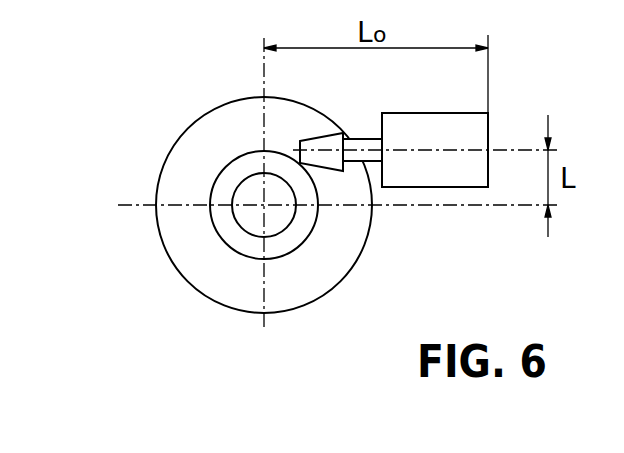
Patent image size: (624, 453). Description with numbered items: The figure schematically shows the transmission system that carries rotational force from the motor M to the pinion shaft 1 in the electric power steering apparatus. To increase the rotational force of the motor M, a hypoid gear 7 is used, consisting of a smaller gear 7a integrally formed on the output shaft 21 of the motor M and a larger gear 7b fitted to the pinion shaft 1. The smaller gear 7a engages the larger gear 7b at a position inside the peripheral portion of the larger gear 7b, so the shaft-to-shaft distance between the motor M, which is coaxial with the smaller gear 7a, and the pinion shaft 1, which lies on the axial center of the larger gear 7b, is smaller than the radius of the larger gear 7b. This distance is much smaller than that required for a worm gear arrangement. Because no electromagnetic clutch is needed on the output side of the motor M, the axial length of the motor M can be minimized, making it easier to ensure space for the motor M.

The pinion shaft 1 is at (247, 220).
The hypoid gear 7 is at (222, 187).
The smaller gear 7a is at (299, 142).
The larger gear 7b is at (200, 152).
The output shaft 21 is at (363, 144).
The motor M is at (483, 132).